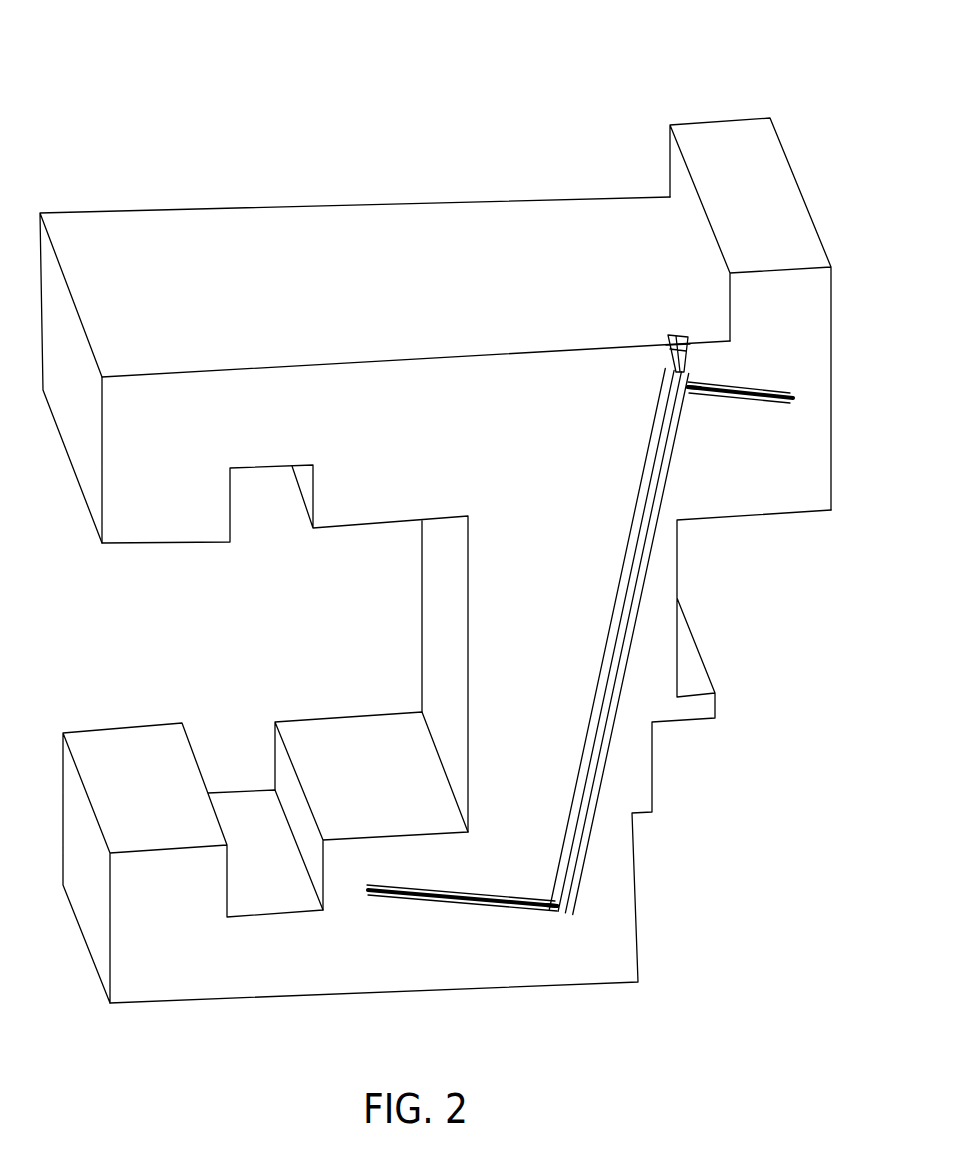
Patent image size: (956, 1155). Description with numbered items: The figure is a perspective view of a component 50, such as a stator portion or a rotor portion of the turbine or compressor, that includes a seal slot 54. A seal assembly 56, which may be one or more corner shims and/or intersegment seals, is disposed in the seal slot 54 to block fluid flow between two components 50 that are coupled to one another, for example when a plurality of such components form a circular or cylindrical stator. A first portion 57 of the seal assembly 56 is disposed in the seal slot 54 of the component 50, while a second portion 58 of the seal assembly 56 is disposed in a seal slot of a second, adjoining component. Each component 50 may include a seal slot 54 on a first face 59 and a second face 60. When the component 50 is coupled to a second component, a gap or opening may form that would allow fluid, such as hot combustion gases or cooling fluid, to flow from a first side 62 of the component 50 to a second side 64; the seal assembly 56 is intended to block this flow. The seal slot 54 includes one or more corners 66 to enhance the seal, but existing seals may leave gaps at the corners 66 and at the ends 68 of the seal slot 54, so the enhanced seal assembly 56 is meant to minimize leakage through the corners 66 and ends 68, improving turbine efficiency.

The component 50 is at (138, 58).
The seal slot 54 is at (672, 324).
The seal assembly 56 is at (642, 583).
The first portion 57 is at (688, 343).
The second portion 58 is at (684, 428).
The first face 59 is at (503, 442).
The second face 60 is at (316, 198).
The first side 62 is at (232, 634).
The second side 64 is at (820, 654).
The corners 66 is at (705, 368).
The ends 68 is at (806, 406).